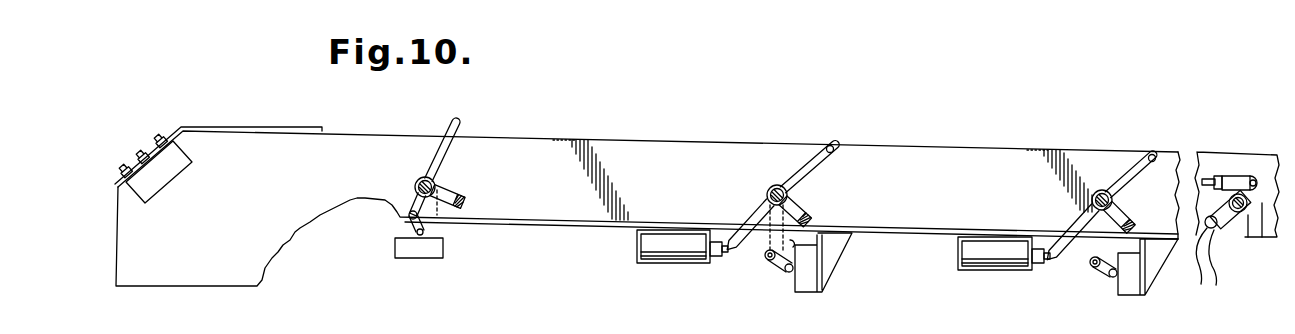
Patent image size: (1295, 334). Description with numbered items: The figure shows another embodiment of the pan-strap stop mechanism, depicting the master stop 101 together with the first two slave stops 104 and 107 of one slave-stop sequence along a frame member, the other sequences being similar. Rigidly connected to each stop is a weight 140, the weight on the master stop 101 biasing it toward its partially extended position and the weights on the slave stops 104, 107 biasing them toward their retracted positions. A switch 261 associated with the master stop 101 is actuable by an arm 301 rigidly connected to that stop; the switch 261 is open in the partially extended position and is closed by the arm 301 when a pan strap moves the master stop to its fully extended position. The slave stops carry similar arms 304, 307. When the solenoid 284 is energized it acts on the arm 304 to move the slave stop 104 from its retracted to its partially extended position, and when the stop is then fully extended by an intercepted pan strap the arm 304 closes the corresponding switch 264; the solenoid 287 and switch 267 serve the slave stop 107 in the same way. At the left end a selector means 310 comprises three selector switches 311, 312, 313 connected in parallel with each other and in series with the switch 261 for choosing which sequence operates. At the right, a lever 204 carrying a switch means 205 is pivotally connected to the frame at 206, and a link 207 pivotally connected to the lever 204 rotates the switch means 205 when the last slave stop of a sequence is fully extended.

The master stop 101 is at (460, 124).
The slave stop 104 is at (830, 145).
The slave stop 107 is at (1155, 152).
The weight 140 is at (465, 202).
The arm 301 is at (412, 210).
The arm 304 is at (752, 216).
The arm 307 is at (1072, 221).
The switch 261 is at (424, 258).
The switch 264 is at (807, 292).
The switch 267 is at (1128, 297).
The solenoid 284 is at (666, 262).
The solenoid 287 is at (1004, 270).
The selector means 310 is at (154, 96).
The selector switch 311 is at (160, 137).
The selector switch 312 is at (140, 151).
The selector switch 313 is at (129, 166).
The lever 204 is at (1253, 218).
The switch means 205 is at (1241, 252).
The pivotal connection 206 is at (1250, 180).
The link 207 is at (1207, 178).